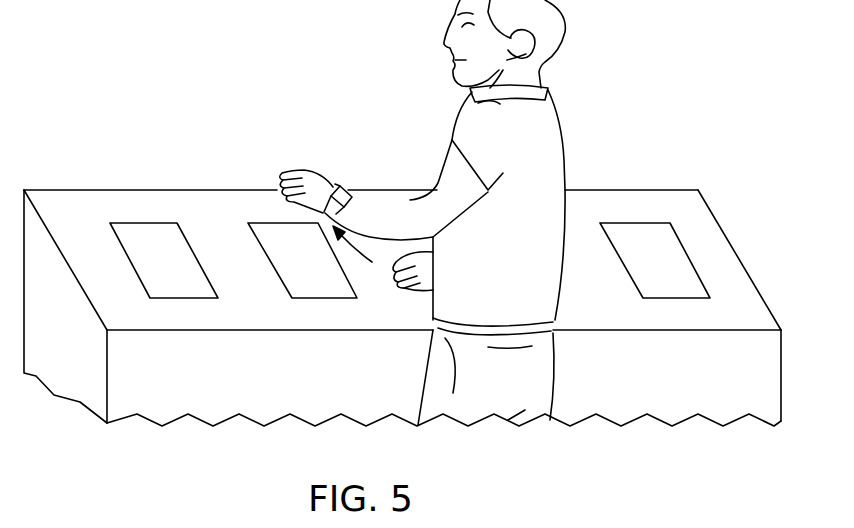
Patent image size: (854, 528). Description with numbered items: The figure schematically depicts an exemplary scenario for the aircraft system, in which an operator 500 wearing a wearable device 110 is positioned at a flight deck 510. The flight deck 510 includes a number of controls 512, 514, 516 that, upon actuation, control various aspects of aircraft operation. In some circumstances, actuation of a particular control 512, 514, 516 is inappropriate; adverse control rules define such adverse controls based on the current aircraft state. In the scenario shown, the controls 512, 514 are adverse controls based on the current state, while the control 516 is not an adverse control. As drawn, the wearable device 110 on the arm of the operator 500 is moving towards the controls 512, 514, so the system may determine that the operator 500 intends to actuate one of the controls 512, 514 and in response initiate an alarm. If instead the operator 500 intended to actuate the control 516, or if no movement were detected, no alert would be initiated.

The operator 500 is at (565, 142).
The flight deck 510 is at (125, 190).
The control 512 is at (181, 300).
The control 514 is at (320, 300).
The control 516 is at (670, 300).
The wearable device 110 is at (345, 186).